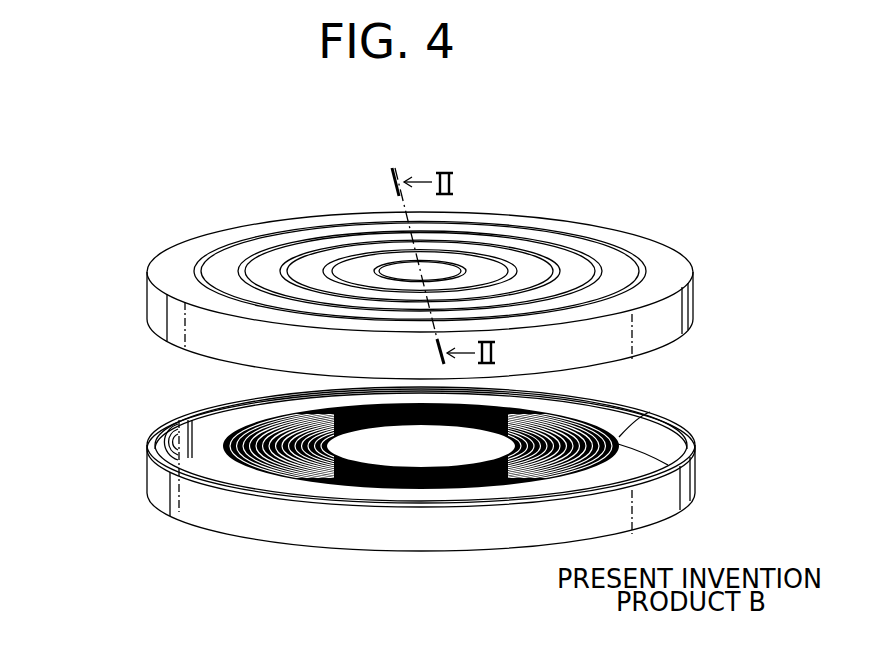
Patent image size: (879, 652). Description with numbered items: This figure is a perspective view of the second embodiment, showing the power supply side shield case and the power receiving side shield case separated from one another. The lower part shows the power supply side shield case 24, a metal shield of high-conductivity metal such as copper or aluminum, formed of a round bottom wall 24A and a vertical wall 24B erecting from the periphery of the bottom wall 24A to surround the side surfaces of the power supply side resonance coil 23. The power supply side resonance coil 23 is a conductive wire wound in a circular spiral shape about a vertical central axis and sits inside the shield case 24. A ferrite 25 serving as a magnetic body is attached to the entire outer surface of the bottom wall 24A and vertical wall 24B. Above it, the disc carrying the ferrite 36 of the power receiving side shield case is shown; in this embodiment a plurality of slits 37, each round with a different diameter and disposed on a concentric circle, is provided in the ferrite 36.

The power supply side resonance coil 23 is at (650, 412).
The power supply side shield case 24 is at (66, 404).
The bottom wall 24A is at (213, 470).
The vertical wall 24B is at (177, 427).
The ferrite 25 is at (275, 520).
The ferrite 36 is at (648, 245).
The slits 37 is at (460, 267).